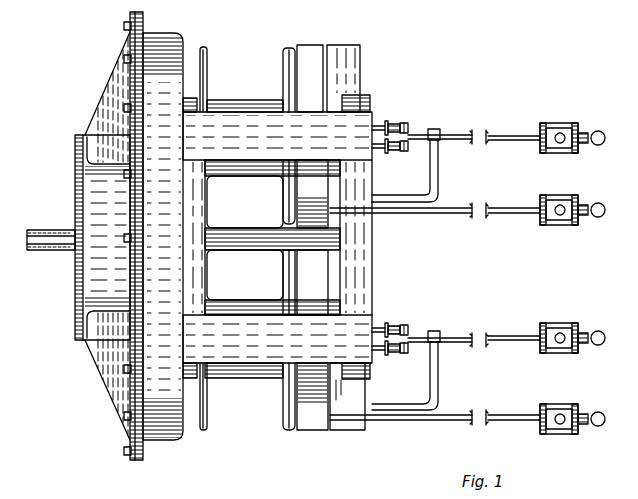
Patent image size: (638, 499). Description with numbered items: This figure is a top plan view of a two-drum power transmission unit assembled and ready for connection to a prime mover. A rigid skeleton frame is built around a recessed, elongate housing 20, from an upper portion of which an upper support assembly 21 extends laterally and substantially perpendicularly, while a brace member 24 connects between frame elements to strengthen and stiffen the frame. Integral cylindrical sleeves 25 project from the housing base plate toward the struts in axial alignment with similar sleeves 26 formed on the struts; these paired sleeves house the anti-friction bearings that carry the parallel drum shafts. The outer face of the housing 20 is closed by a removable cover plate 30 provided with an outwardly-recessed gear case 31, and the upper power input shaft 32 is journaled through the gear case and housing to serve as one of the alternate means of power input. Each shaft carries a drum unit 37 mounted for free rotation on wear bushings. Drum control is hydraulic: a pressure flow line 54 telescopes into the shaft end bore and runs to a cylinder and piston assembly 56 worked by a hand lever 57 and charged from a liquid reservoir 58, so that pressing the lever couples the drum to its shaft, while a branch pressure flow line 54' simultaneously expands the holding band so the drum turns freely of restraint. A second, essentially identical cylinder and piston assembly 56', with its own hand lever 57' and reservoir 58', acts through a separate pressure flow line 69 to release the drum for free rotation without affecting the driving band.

The housing 20 is at (153, 236).
The upper support assembly 21 is at (277, 237).
The brace member 24 is at (268, 250).
The cylindrical sleeves 25 is at (190, 98).
The sleeves 26 is at (368, 96).
The cover plate 30 is at (128, 88).
The gear case 31 is at (100, 200).
The upper power input shaft 32 is at (53, 251).
The drum unit 37 is at (260, 173).
The pressure flow line 54 is at (430, 229).
The branch pressure flow line 54' is at (421, 275).
The cylinder and piston assembly 56 is at (533, 250).
The cylinder and piston assembly 56' is at (533, 323).
The hand lever 57 is at (603, 268).
The hand lever 57' is at (600, 209).
The liquid reservoir 58 is at (566, 221).
The reservoir 58' is at (573, 301).
The pressure flow line 69 is at (456, 213).